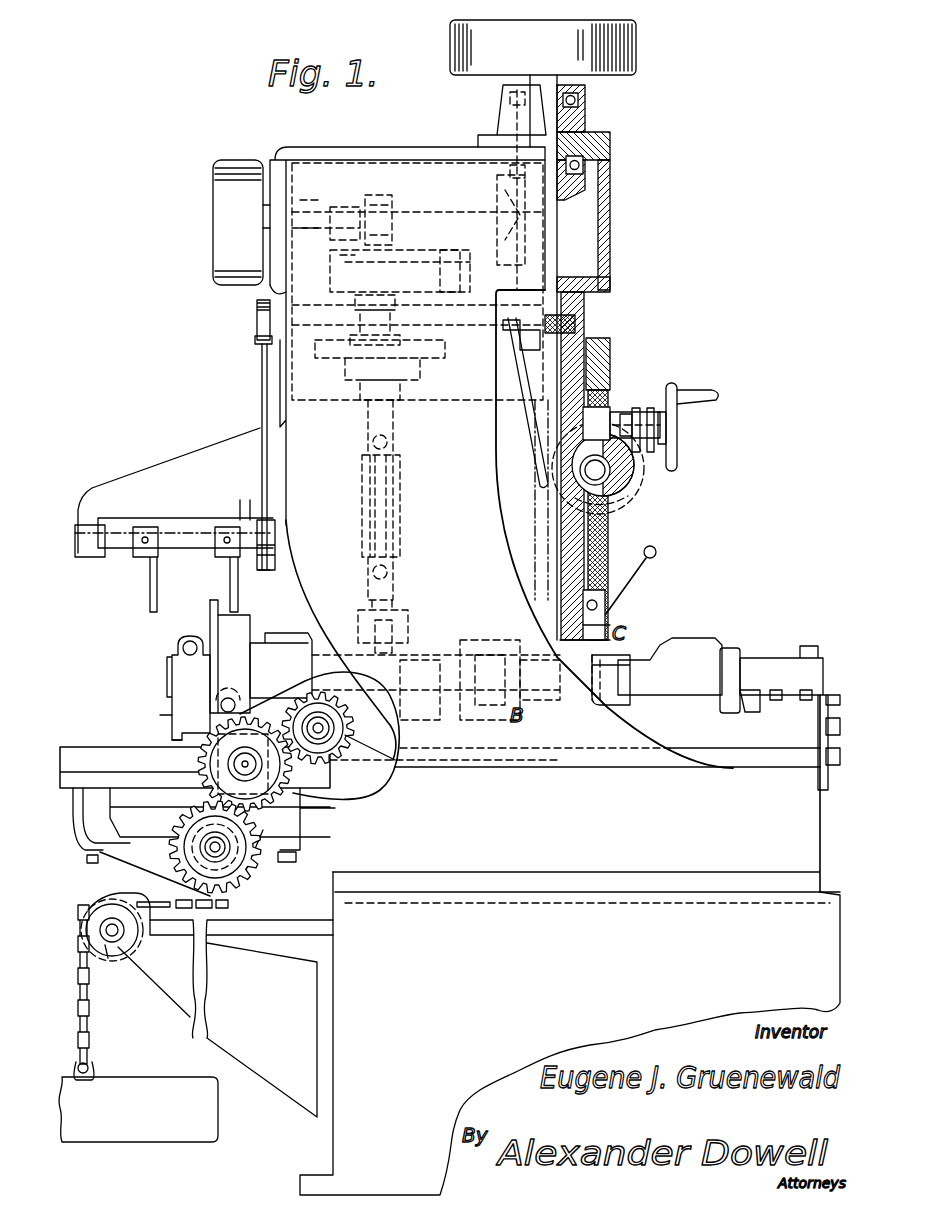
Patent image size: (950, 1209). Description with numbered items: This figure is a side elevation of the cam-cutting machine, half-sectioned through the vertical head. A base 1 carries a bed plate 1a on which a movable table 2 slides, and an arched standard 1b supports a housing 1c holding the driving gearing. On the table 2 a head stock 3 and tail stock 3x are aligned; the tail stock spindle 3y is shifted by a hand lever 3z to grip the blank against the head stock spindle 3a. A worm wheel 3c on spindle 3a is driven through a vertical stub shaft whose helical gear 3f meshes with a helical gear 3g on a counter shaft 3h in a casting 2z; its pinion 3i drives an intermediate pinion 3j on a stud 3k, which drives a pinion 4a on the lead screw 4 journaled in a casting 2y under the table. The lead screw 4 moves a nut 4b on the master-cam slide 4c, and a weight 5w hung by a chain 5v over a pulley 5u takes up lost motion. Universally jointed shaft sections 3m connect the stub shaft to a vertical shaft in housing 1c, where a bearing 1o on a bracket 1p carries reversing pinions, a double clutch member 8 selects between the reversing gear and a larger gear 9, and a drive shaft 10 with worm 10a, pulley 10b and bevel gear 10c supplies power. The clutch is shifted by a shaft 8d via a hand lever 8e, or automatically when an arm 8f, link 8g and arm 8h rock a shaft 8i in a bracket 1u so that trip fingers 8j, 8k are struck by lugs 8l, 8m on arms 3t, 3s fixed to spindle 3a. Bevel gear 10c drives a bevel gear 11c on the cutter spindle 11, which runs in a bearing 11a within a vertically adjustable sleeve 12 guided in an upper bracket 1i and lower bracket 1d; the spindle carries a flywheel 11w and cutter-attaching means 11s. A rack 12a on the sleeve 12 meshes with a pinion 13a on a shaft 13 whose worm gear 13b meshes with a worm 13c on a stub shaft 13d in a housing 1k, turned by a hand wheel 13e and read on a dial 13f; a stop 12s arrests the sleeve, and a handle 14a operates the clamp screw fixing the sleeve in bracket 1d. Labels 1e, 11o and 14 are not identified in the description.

The base 1 is at (570, 945).
The bed plate 1a is at (738, 770).
The standard 1b is at (283, 416).
The housing 1c is at (378, 166).
The lower bracket or head 1d is at (655, 548).
The frame bed 1e is at (535, 748).
The upper bracket 1i is at (600, 382).
The housing 1k is at (650, 478).
The bearing 1o is at (340, 270).
The bracket 1p is at (444, 271).
The bracket 1u is at (190, 457).
The movable table 2 is at (94, 750).
The casting 2y is at (86, 852).
The casting 2z is at (300, 670).
The head stock 3 is at (432, 640).
The spindle 3a is at (167, 670).
The worm wheel 3c is at (396, 640).
The helical gear 3f is at (418, 750).
The helical gear 3g is at (398, 762).
The counter shaft 3h is at (335, 745).
The pinion 3i is at (345, 780).
The intermediate pinion 3j is at (205, 754).
The stud 3k is at (235, 766).
The flexible universally jointed shaft sections 3m is at (365, 428).
The arm 3s is at (250, 644).
The arm 3t is at (172, 722).
The tail stock 3x is at (685, 650).
The slidable spindle 3y is at (773, 656).
The hand lever 3z is at (806, 656).
The lead screw shaft 4 is at (192, 908).
The pinion 4a is at (240, 862).
The nut 4b is at (268, 862).
The slide 4c is at (130, 866).
The pulley 5u is at (108, 960).
The chain 5v is at (90, 1027).
The weight 5w is at (155, 1078).
The double clutch member 8 is at (393, 318).
The shaft 8d is at (443, 315).
The hand lever 8e is at (512, 403).
The arm 8f is at (256, 327).
The link 8g is at (260, 466).
The arm 8h is at (276, 554).
The rock shaft 8i is at (186, 528).
The trip finger 8j is at (154, 584).
The trip finger 8k is at (237, 583).
The lug 8l is at (210, 606).
The lug 8m is at (172, 740).
The gear 9 is at (426, 356).
The horizontal drive shaft 10 is at (418, 212).
The worm 10a is at (380, 200).
The pulley 10b is at (213, 208).
The bevel gear 10c is at (498, 206).
The cutter spindle 11 is at (560, 252).
The bearing 11a is at (576, 325).
The bevel gear 11c is at (580, 200).
The spindle end 11o is at (612, 628).
The means for detachably attaching the milling cutter 11s is at (553, 612).
The flywheel 11w is at (637, 47).
The vertically adjustable sleeve 12 is at (612, 352).
The rack 12a is at (610, 520).
The stop 12s is at (500, 432).
The shaft 13 is at (600, 472).
The small pinion 13a is at (610, 495).
The worm gear 13b is at (660, 453).
The worm 13c is at (627, 407).
The stub shaft 13d is at (700, 393).
The hand wheel 13e is at (680, 421).
The graduated dial 13f is at (640, 410).
The stop 14 is at (606, 603).
The handle 14a is at (640, 566).